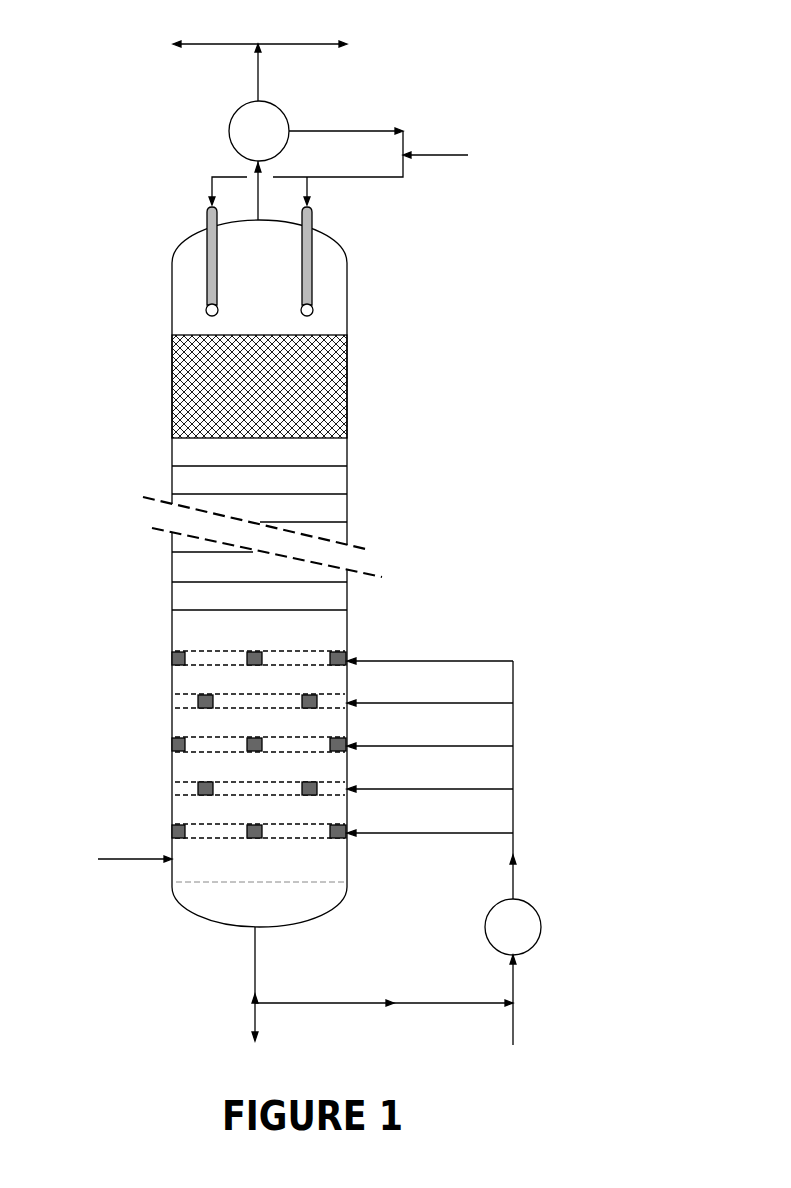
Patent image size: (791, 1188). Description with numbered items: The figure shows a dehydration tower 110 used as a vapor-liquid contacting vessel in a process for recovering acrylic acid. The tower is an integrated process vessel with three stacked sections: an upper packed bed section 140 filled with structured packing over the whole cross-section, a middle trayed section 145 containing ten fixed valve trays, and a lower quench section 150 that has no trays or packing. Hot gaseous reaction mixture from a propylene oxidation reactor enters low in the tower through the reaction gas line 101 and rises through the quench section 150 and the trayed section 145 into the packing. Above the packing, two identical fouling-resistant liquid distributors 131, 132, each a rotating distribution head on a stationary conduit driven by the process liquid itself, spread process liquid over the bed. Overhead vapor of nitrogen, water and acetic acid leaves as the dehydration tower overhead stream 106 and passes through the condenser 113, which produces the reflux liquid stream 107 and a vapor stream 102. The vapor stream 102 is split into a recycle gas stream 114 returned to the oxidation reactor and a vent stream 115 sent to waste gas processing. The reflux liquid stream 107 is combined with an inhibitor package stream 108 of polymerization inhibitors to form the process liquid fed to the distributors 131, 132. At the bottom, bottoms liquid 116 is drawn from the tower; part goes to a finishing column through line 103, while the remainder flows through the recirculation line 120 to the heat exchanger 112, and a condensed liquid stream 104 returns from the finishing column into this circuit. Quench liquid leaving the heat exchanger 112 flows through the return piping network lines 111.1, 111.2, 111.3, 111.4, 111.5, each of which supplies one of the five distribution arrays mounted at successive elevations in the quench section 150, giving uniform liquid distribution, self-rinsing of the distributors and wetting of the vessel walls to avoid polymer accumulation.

The reaction gas line 101 is at (123, 859).
The vapor stream 102 is at (272, 72).
The line to finishing column 103 is at (256, 1032).
The condensed liquid stream 104 is at (514, 1008).
The dehydration tower overhead stream 106 is at (250, 190).
The reflux liquid stream 107 is at (338, 160).
The inhibitor package stream 108 is at (453, 156).
The dehydration tower 110 is at (355, 482).
The return piping network line 111.1 is at (430, 653).
The return piping network line 111.2 is at (430, 695).
The return piping network line 111.3 is at (430, 738).
The return piping network line 111.4 is at (430, 781).
The return piping network line 111.5 is at (430, 825).
The heat exchanger 112 is at (513, 808).
The condenser 113 is at (259, 131).
The recycle gas stream 114 is at (196, 45).
The vent stream 115 is at (324, 45).
The bottoms liquid 116 is at (269, 965).
The recirculation line 120 is at (384, 996).
The fouling-resistant liquid distributor 131 is at (226, 261).
The fouling-resistant liquid distributor 132 is at (321, 261).
The upper packed bed section 140 is at (158, 337).
The middle trayed section 145 is at (150, 447).
The lower quench section 150 is at (150, 648).